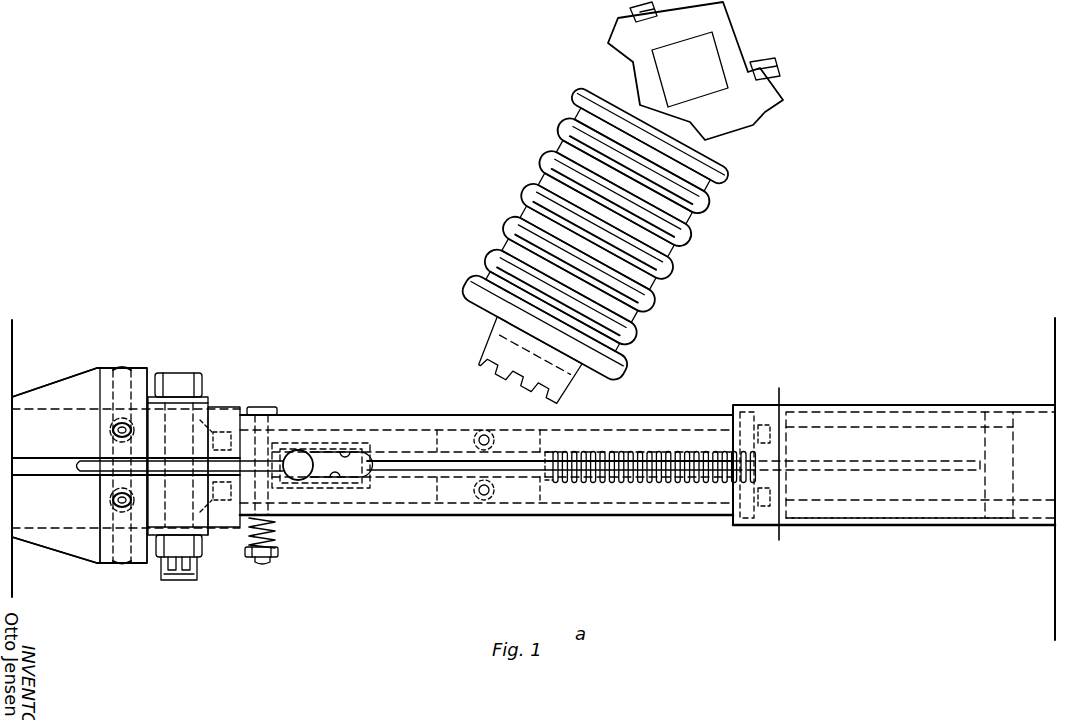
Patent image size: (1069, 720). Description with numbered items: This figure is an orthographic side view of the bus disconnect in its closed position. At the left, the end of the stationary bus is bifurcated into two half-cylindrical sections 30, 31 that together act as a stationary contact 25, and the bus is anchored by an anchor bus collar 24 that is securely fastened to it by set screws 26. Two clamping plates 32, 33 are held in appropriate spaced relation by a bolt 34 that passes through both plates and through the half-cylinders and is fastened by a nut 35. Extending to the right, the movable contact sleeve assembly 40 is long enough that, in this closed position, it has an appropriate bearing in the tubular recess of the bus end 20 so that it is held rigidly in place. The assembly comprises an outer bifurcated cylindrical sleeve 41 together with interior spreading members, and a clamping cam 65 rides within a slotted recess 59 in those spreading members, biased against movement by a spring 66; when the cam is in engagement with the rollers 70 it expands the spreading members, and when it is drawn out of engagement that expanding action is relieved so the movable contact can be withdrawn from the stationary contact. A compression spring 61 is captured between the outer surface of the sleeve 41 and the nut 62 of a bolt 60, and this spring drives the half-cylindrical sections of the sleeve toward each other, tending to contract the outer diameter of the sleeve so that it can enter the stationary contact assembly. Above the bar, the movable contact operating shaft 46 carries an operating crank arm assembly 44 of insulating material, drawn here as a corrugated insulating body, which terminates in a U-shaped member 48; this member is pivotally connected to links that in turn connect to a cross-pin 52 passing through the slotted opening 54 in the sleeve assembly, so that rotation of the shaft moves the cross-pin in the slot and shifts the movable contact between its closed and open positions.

The bus end 20 is at (757, 527).
The anchor bus collar 24 is at (40, 388).
The stationary contact 25 is at (69, 358).
The set screw 26 is at (111, 430).
The half-cylindrical section 30 is at (118, 414).
The half-cylindrical section 31 is at (122, 508).
The clamping plate 32 is at (156, 416).
The clamping plate 33 is at (156, 516).
The bolt 34 is at (172, 583).
The nut 35 is at (196, 553).
The movable contact sleeve assembly 40 is at (486, 485).
The outer bifurcated cylindrical sleeve 41 is at (655, 414).
The operating crank arm assembly 44 is at (750, 192).
The movable contact operating shaft 46 is at (706, 56).
The U-shaped member 48 is at (500, 351).
The cross-pin 52 is at (305, 452).
The slotted opening 54 is at (345, 455).
The slotted recess 59 is at (318, 478).
The bolt 60 is at (262, 562).
The compression spring 61 is at (247, 540).
The nut 62 is at (278, 553).
The clamping cam 65 is at (463, 477).
The spring 66 is at (693, 450).
The roller 70 is at (480, 432).